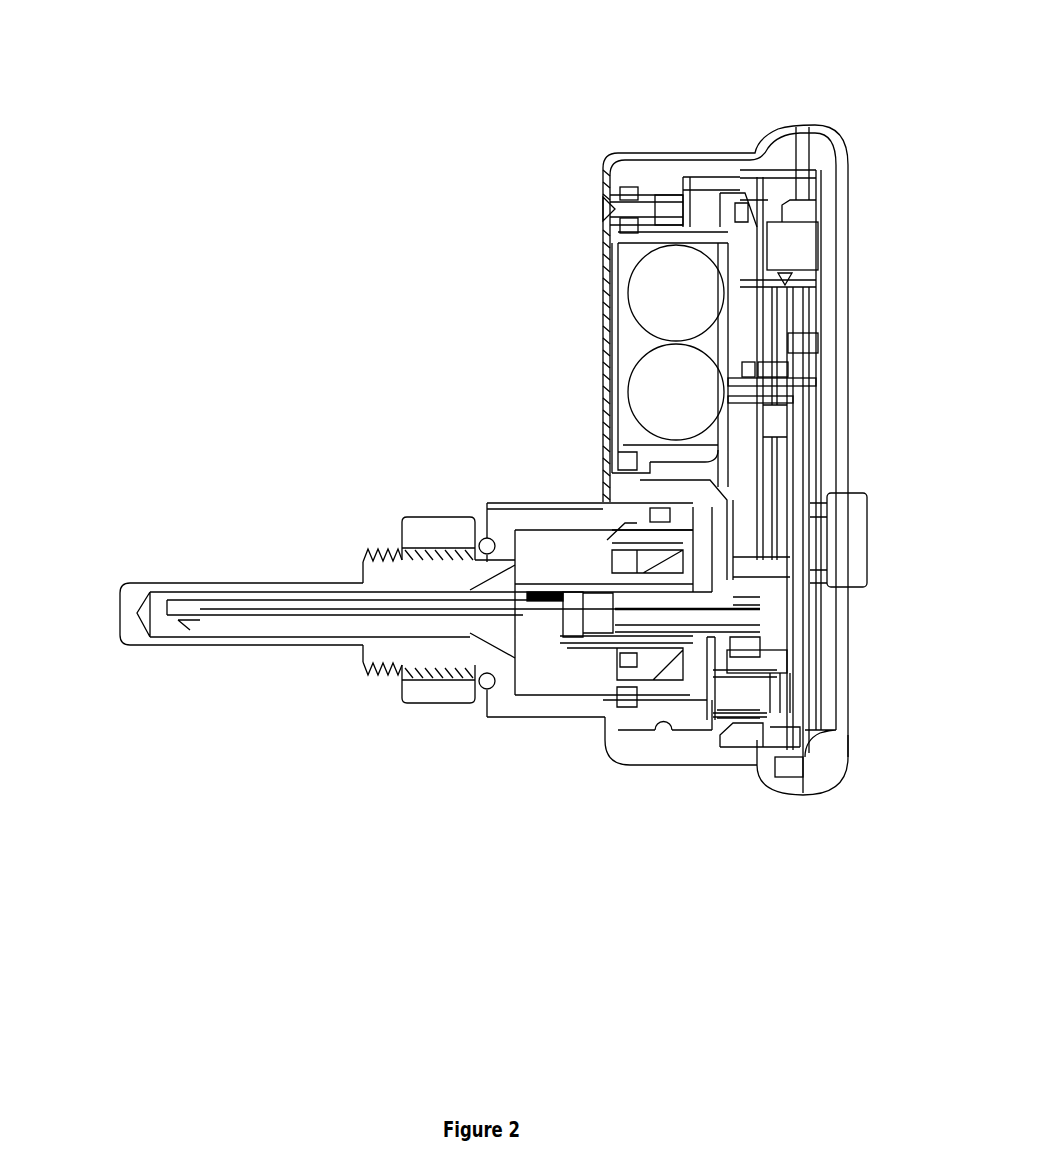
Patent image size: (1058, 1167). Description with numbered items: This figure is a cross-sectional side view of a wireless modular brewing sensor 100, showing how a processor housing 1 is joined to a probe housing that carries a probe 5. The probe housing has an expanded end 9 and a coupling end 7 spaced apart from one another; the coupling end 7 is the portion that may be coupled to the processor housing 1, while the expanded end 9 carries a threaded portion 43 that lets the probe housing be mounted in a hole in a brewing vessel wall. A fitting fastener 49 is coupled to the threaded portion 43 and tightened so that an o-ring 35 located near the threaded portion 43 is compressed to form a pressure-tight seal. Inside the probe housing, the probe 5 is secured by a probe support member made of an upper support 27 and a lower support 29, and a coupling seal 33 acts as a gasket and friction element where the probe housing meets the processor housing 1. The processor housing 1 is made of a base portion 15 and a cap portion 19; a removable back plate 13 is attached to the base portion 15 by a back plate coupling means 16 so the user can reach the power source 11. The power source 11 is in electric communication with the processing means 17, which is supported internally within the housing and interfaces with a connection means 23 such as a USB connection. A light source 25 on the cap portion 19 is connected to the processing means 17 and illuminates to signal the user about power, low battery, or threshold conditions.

The wireless modular brewing sensor 100 is at (502, 139).
The processor housing 1 is at (718, 135).
The probe 5 is at (193, 605).
The coupling end 7 is at (572, 715).
The expanded end 9 is at (128, 585).
The power source 11 is at (648, 395).
The removable back plate 13 is at (602, 405).
The base portion 15 is at (620, 753).
The back plate coupling means 16 is at (603, 209).
The processing means 17 is at (800, 688).
The cap portion 19 is at (825, 793).
The connection means 23 is at (587, 627).
The light source 25 is at (865, 573).
The upper support 27 is at (650, 537).
The lower support 29 is at (693, 682).
The coupling seal 33 is at (660, 727).
The second o-ring 35 is at (483, 688).
The threaded portion 43 is at (362, 668).
The fitting fastener 49 is at (400, 518).